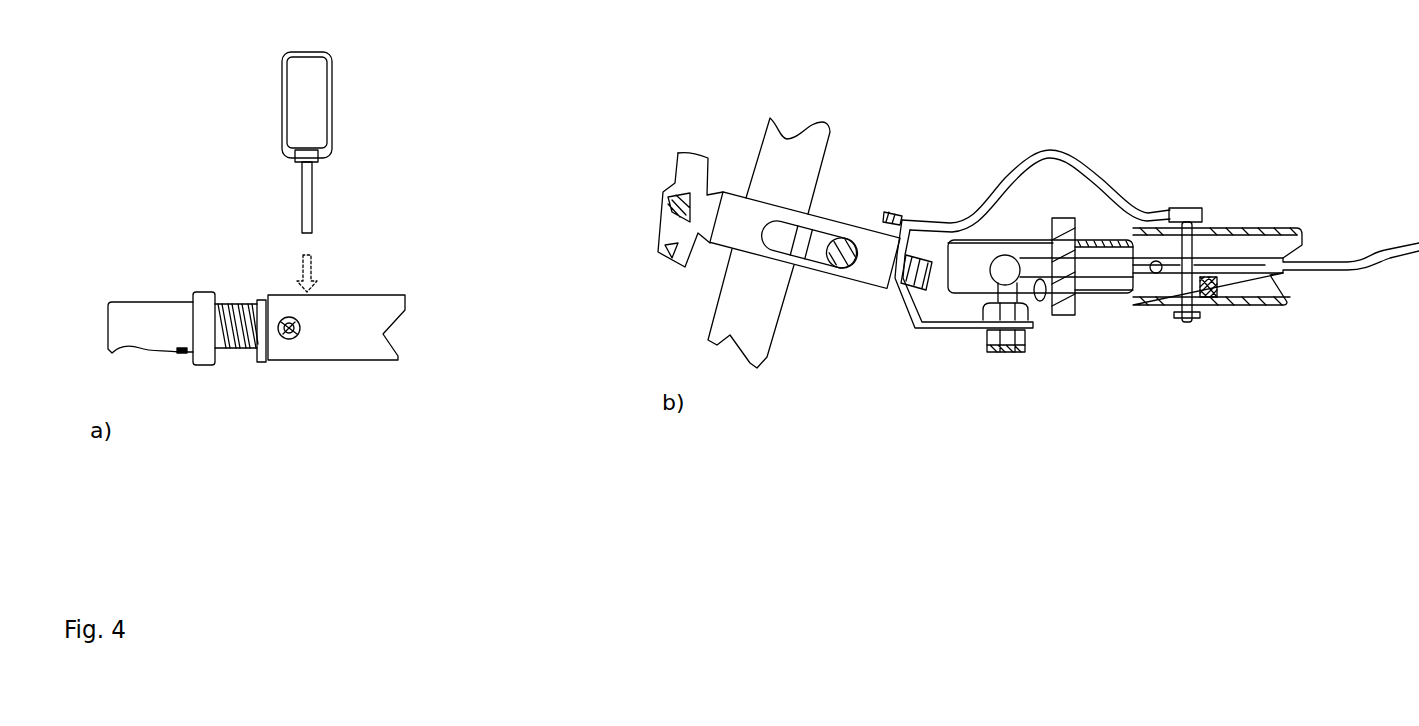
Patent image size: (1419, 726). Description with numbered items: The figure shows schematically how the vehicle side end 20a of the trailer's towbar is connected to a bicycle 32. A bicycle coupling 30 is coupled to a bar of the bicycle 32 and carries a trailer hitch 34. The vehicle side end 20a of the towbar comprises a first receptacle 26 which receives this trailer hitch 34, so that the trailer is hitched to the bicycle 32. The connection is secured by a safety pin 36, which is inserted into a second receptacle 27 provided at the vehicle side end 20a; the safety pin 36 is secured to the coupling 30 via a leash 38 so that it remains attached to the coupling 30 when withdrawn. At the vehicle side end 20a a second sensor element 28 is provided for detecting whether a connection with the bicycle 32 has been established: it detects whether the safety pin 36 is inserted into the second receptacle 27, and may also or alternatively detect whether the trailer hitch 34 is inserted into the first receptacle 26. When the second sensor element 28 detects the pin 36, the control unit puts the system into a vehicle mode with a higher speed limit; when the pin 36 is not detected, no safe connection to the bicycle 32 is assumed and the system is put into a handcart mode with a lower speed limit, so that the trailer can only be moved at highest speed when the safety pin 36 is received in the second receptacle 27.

In FIG. 4a, the vehicle side end of the towbar 20a is at (352, 312).
In FIG. 4b, the vehicle side end of the towbar 20a is at (1227, 233).
In FIG. 4b, the first receptacle 26 is at (1017, 255).
In FIG. 4b, the second receptacle 27 is at (1193, 292).
In FIG. 4b, the second sensor element 28 is at (1240, 263).
In FIG. 4b, the bicycle coupling 30 is at (743, 202).
In FIG. 4b, the bicycle 32 is at (796, 147).
In FIG. 4b, the trailer hitch 34 is at (1003, 277).
In FIG. 4a, the safety pin 36 is at (305, 200).
In FIG. 4b, the safety pin 36 is at (1185, 217).
In FIG. 4b, the leash 38 is at (1096, 168).